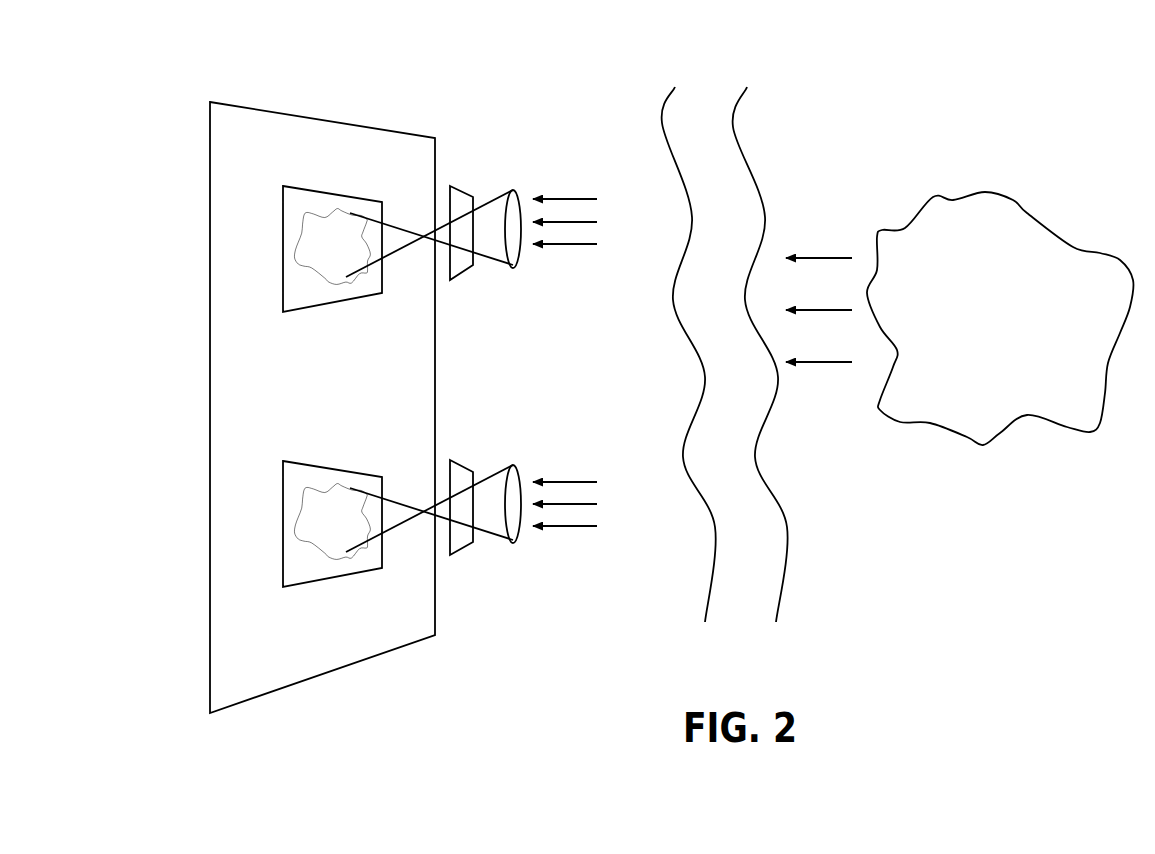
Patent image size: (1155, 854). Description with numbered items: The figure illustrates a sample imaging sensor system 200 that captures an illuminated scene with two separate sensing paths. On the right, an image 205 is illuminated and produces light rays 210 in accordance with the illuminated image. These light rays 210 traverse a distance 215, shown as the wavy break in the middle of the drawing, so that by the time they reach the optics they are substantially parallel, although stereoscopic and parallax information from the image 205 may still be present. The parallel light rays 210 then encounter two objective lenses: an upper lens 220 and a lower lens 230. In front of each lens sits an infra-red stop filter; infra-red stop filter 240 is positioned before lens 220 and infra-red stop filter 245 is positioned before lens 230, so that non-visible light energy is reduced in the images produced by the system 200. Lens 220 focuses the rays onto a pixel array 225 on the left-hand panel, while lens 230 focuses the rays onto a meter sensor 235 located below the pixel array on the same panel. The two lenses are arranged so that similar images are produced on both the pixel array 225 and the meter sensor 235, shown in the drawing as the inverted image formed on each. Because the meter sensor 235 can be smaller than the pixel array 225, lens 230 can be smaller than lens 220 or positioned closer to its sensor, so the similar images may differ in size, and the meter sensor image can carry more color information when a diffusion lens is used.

The imaging sensor system 200 is at (277, 105).
The image 205 is at (1051, 213).
The light rays 210 is at (569, 191).
The distance 215 is at (733, 59).
The lens 220 is at (513, 186).
The pixel array 225 is at (343, 190).
The lens 230 is at (513, 461).
The meter sensor 235 is at (343, 465).
The infra-red stop filter 240 is at (461, 181).
The infra-red stop filter 245 is at (461, 456).